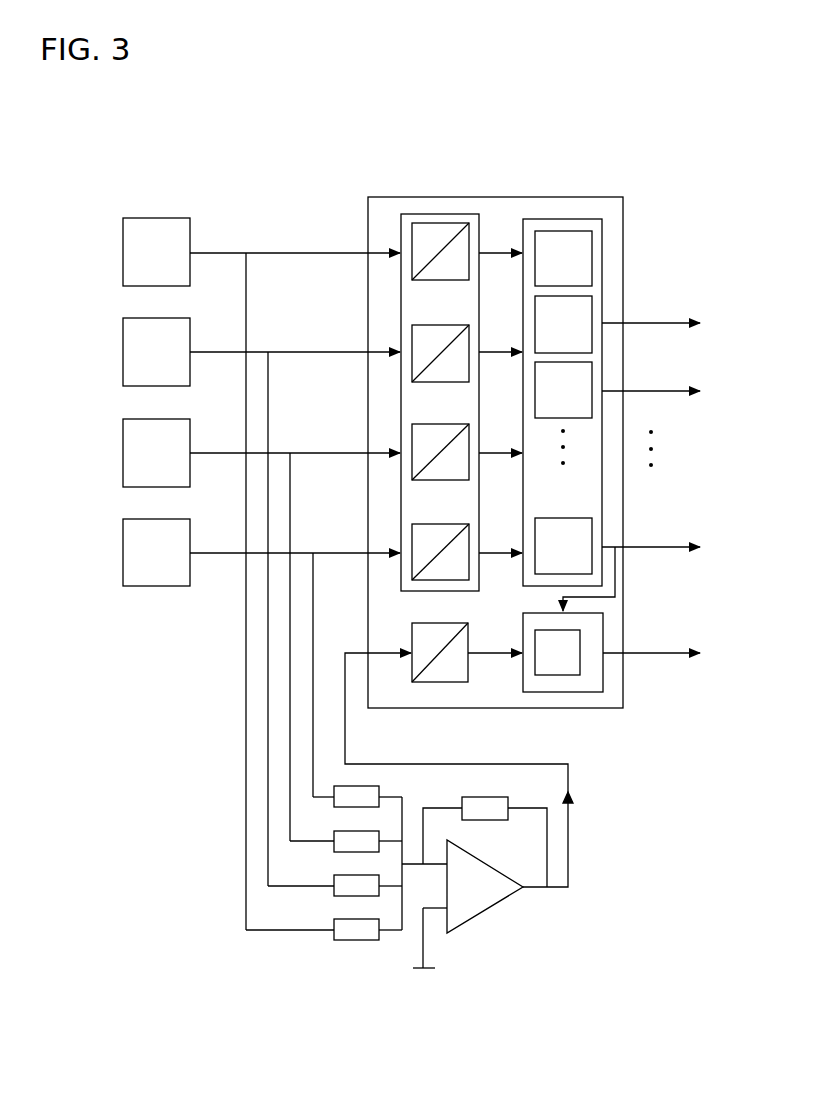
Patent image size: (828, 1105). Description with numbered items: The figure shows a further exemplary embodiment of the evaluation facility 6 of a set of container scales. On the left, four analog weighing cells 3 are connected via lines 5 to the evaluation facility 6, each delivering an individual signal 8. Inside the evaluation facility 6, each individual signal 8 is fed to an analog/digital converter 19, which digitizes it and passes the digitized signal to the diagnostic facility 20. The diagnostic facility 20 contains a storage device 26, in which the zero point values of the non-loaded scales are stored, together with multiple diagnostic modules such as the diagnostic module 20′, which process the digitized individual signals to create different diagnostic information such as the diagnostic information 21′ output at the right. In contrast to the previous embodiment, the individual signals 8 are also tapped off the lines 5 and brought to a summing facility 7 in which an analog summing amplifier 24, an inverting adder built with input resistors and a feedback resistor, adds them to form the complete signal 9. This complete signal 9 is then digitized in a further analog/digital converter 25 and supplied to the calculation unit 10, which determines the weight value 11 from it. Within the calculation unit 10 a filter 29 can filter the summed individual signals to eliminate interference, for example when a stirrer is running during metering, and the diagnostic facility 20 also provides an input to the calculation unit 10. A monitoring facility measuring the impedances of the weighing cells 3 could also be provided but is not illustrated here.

The weighing cell 3 is at (123, 253).
The line 5 is at (222, 251).
The individual signal 8 is at (350, 251).
The evaluation facility 6 is at (503, 197).
The analog/digital converter 19 is at (437, 214).
The diagnostic facility 20 is at (562, 367).
The storage device 26 is at (563, 258).
The diagnostic module 20′ is at (563, 324).
The diagnostic information 21′ is at (658, 322).
The analog/digital converter 25 is at (433, 683).
The calculation unit 10 is at (565, 682).
The filter 29 is at (543, 676).
The weight value 11 is at (662, 653).
The summing facility 7 is at (467, 877).
The analog summing amplifier 24 is at (478, 916).
The complete signal 9 is at (572, 820).